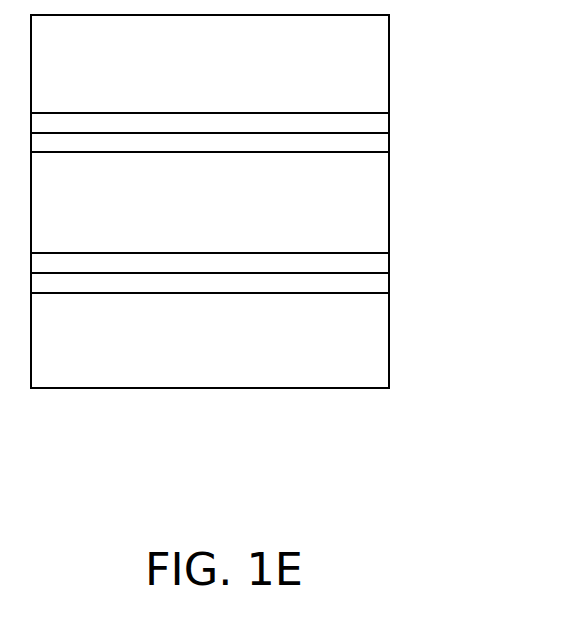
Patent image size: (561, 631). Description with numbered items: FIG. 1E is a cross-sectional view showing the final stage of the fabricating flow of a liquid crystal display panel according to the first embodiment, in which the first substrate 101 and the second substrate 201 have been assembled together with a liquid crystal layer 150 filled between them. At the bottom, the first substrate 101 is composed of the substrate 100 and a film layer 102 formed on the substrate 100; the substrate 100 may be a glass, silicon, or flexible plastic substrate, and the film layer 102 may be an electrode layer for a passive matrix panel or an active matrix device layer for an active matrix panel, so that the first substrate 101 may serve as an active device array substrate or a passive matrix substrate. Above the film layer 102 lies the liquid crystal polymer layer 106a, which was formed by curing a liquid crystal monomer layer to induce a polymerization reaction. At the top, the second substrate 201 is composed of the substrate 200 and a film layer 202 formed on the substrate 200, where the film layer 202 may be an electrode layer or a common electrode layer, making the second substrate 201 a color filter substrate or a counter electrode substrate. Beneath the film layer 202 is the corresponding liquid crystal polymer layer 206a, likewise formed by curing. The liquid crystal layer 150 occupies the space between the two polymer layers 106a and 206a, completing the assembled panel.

The substrate 200 is at (370, 72).
The film layer 202 is at (370, 122).
The liquid crystal polymer layer 206a is at (370, 142).
The liquid crystal layer 150 is at (352, 203).
The liquid crystal polymer layer 106a is at (370, 262).
The film layer 102 is at (370, 280).
The substrate 100 is at (365, 347).
The second substrate 201 is at (488, 33).
The first substrate 101 is at (488, 302).